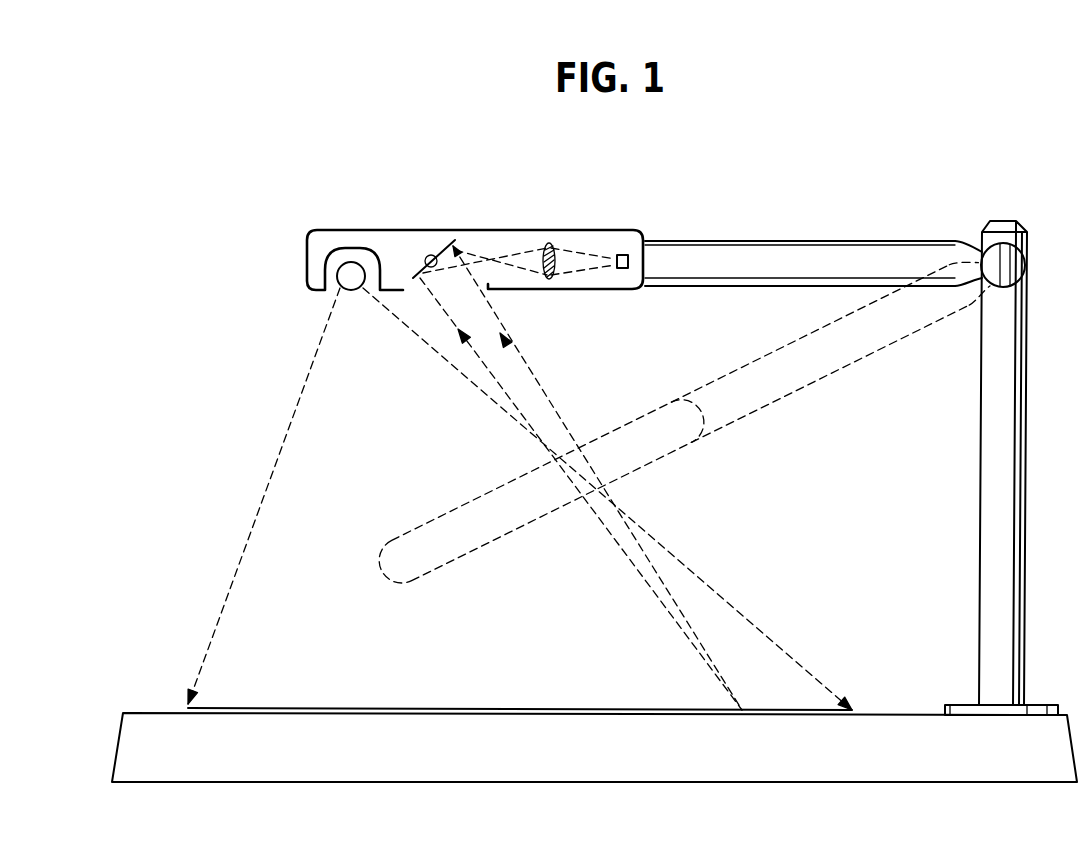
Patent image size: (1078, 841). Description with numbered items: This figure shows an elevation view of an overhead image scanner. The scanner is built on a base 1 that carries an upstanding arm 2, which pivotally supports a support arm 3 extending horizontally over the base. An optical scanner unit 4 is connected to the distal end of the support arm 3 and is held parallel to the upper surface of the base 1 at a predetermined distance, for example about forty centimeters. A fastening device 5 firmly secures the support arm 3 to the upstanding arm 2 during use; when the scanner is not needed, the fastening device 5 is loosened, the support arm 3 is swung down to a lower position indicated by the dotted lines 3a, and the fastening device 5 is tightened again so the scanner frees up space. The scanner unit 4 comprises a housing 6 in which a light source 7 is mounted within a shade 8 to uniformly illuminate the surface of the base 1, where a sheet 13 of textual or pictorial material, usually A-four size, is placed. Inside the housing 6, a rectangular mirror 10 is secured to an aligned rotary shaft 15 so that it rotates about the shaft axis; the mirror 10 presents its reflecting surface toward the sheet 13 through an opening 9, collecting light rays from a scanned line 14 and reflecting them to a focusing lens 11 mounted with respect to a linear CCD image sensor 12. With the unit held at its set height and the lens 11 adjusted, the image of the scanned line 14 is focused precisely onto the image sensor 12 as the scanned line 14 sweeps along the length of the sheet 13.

The base 1 is at (143, 712).
The upstanding arm 2 is at (1028, 421).
The support arm 3 is at (805, 240).
The lower position of arm (dotted lines) 3a is at (792, 392).
The optical scanner unit 4 is at (487, 185).
The fastening device 5 is at (1036, 249).
The housing 6 is at (522, 230).
The light source 7 is at (351, 262).
The shade 8 is at (325, 262).
The opening 9 is at (413, 292).
The rectangular mirror 10 is at (438, 248).
The focusing lens 11 is at (551, 243).
The linear CCD image sensor 12 is at (619, 255).
The sheet 13 is at (461, 708).
The scanned line 14 is at (741, 708).
The rotary shaft 15 is at (428, 258).